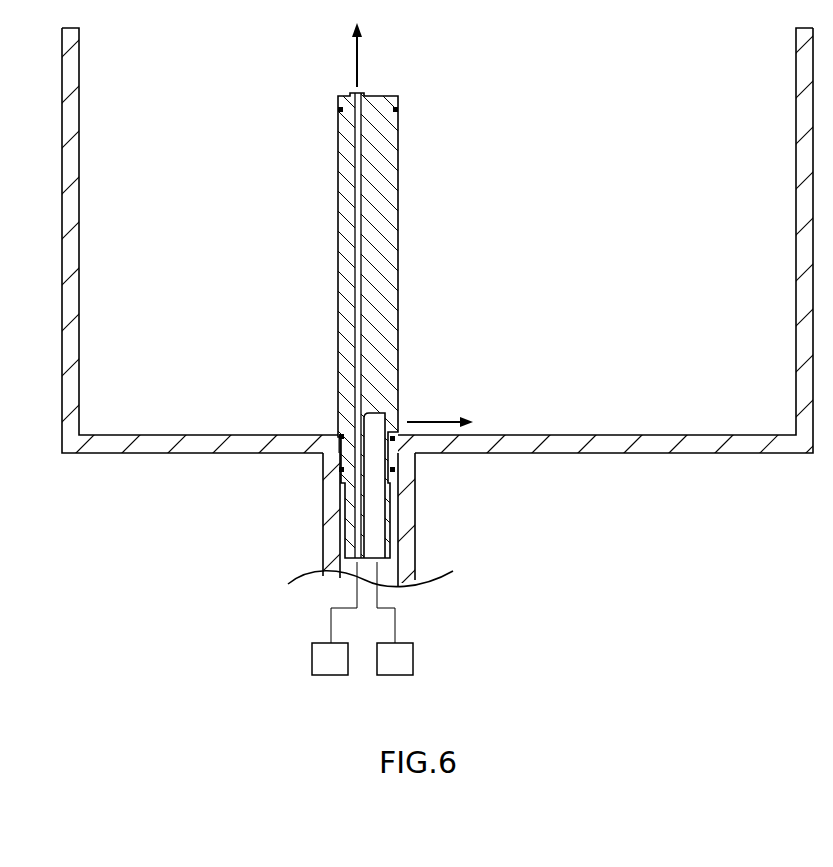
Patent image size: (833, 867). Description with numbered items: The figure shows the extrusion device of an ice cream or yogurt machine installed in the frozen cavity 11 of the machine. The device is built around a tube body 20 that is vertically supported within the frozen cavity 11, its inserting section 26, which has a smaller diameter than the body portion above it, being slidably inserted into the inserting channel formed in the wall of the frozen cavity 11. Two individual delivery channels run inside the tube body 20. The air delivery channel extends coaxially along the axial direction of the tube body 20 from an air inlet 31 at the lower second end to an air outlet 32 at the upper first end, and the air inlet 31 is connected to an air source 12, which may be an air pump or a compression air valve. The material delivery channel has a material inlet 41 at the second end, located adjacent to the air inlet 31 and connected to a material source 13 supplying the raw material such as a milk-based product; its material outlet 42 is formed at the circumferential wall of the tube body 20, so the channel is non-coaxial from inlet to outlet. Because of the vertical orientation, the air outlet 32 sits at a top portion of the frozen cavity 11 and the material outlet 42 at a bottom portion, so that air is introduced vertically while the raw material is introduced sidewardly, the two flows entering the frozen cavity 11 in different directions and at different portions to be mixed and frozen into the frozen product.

The frozen cavity 11 is at (673, 272).
The tube body 20 is at (386, 310).
The inserting section 26 is at (323, 437).
The air inlet 31 is at (321, 583).
The material inlet 41 is at (409, 584).
The air outlet 32 is at (376, 81).
The material outlet 42 is at (418, 398).
The air source 12 is at (334, 618).
The material source 13 is at (395, 618).